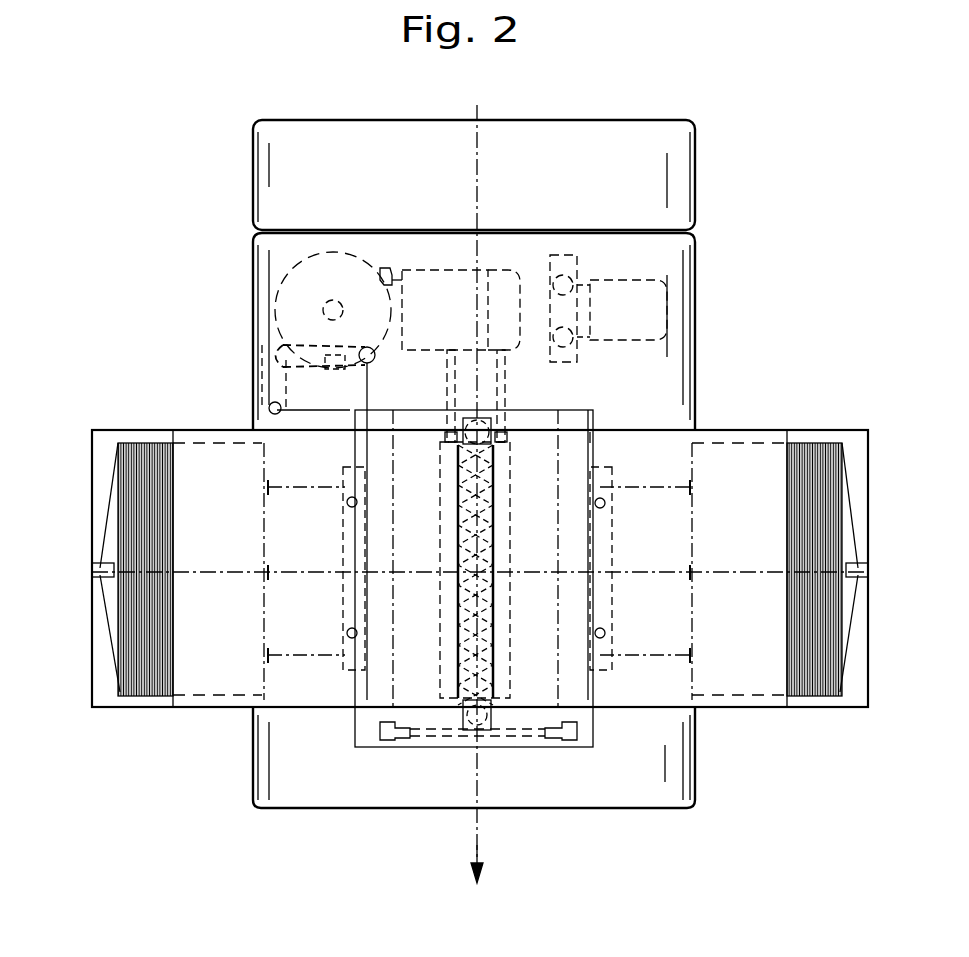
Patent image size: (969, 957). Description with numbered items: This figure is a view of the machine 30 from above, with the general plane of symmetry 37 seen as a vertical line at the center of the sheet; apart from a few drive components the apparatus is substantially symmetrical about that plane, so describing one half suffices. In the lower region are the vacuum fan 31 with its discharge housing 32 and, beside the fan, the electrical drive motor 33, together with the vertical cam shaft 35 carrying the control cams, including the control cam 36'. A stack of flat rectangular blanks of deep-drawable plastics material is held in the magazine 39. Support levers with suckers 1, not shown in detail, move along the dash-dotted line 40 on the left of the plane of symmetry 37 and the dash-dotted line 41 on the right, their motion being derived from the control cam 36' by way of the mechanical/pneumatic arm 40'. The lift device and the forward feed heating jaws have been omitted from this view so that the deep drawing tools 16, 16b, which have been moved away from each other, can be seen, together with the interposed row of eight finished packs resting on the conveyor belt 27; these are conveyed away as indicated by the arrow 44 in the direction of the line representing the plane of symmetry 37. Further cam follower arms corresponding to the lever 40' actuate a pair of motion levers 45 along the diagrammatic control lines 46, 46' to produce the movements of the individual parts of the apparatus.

The suckers 1 is at (270, 488).
The deep drawing tool 16 is at (479, 561).
The deep drawing tool 16b is at (506, 575).
The conveyor belt 27 is at (470, 737).
The machine 30 is at (703, 356).
The vacuum fan 31 is at (655, 292).
The discharge housing 32 is at (577, 260).
The electrical drive motor 33 is at (431, 272).
The vertical cam shaft 35 is at (323, 310).
The control cam 36' is at (287, 295).
The plane of symmetry 37 is at (478, 179).
The magazine 39 is at (133, 442).
The dash-dotted line 40 is at (332, 551).
The mechanical/pneumatic arm 40' is at (264, 379).
The dash-dotted line 41 is at (352, 352).
The arrow 44 is at (478, 845).
The motion levers 45 is at (385, 740).
The control line 46 is at (415, 558).
The control line 46' is at (535, 558).